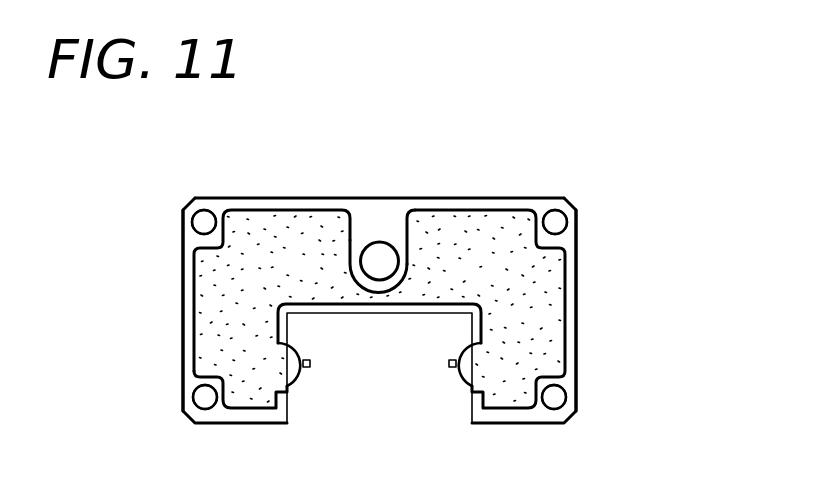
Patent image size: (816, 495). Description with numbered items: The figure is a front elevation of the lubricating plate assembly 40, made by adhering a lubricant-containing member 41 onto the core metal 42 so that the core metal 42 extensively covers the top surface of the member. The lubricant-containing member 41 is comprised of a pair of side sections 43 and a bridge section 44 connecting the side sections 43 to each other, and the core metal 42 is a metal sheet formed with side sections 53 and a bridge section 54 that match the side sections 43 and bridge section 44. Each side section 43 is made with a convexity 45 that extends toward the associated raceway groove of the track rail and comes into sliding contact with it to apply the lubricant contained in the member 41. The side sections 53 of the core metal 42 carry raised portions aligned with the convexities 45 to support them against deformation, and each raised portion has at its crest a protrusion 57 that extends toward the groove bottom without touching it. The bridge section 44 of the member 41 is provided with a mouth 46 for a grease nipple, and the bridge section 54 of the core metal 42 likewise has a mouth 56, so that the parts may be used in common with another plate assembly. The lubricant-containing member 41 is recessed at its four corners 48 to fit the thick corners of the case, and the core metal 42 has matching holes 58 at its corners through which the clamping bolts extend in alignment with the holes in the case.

The lubricating plate assembly 40 is at (586, 200).
The lubricant-containing member 41 is at (538, 312).
The core metal 42 is at (540, 205).
The side sections 43 is at (218, 308).
The bridge section 44 is at (402, 298).
The convexities 45 is at (296, 374).
The mouth 46 is at (355, 236).
The four corners 48 is at (218, 229).
The side sections 53 is at (182, 352).
The bridge section 54 is at (403, 218).
The mouth 56 is at (380, 250).
The protrusion 57 is at (309, 365).
The matching holes 58 is at (204, 222).